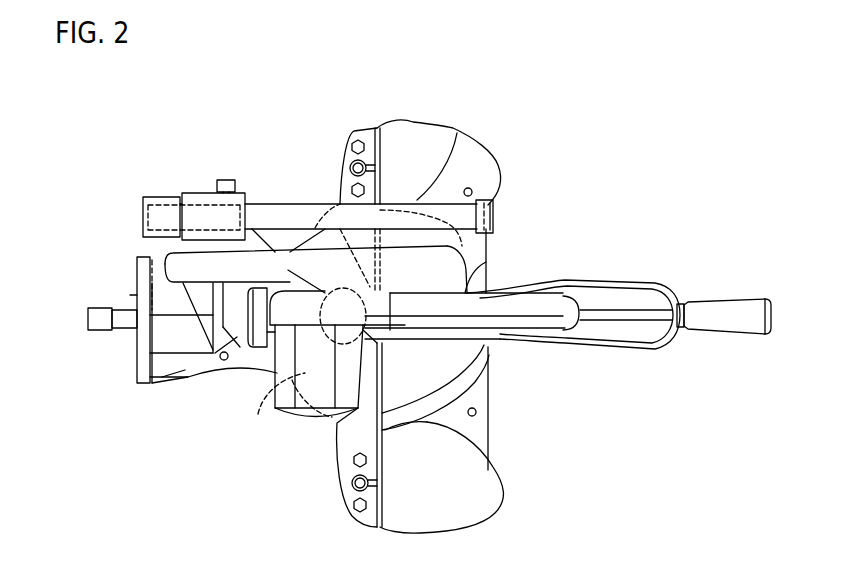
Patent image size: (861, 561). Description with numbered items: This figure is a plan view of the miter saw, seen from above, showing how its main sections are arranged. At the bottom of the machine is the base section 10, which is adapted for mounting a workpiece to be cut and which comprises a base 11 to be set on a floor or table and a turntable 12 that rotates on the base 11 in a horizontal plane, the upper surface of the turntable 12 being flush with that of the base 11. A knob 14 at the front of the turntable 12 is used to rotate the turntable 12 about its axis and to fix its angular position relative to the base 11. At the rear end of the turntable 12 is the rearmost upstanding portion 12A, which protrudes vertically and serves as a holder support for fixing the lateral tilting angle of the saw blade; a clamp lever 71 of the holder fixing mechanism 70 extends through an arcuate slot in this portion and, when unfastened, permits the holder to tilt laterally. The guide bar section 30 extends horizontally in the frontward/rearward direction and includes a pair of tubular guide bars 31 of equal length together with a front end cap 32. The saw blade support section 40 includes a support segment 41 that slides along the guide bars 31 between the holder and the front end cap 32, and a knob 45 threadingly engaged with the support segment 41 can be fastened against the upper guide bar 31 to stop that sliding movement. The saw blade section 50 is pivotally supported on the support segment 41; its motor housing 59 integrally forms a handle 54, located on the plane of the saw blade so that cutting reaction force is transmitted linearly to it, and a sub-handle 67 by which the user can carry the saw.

The base section 10 is at (542, 408).
The base 11 is at (468, 477).
The turntable 12 is at (447, 428).
The rearmost upstanding portion 12A is at (185, 350).
The knob 14 is at (724, 291).
The guide bar section 30 is at (405, 190).
The guide bar 31 is at (328, 177).
The front end cap 32 is at (511, 198).
The saw blade support section 40 is at (191, 163).
The support segment 41 is at (204, 183).
The knob 45 is at (241, 159).
The saw blade section 50 is at (409, 287).
The handle 54 is at (522, 289).
The motor housing 59 is at (296, 384).
The sub-handle 67 is at (290, 218).
The holder fixing mechanism 70 is at (91, 345).
The clamp lever 71 is at (102, 291).